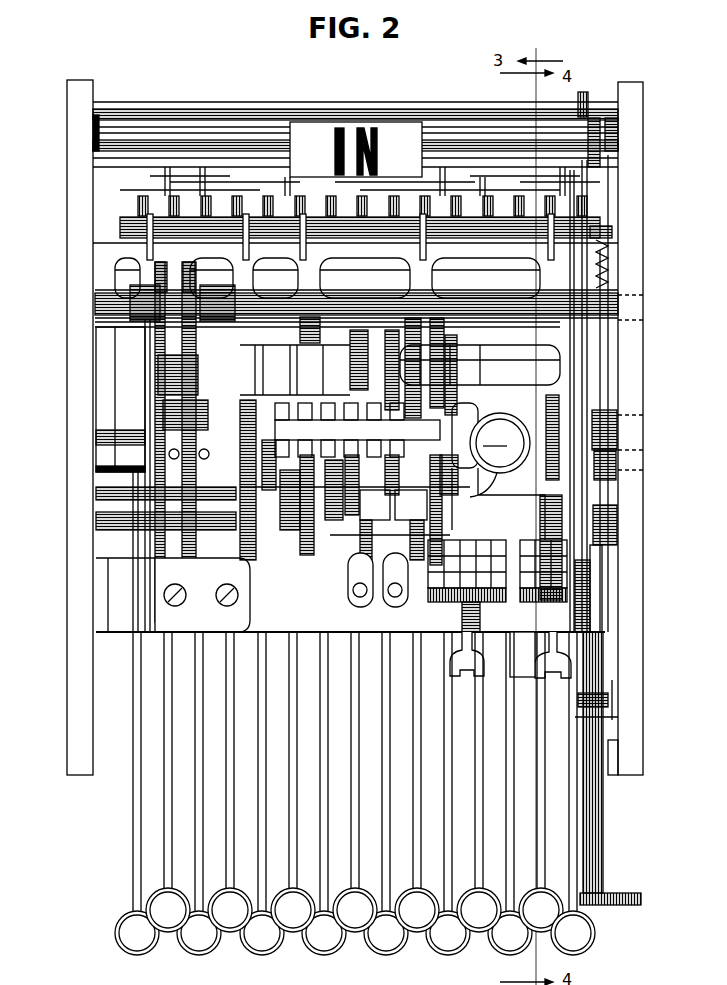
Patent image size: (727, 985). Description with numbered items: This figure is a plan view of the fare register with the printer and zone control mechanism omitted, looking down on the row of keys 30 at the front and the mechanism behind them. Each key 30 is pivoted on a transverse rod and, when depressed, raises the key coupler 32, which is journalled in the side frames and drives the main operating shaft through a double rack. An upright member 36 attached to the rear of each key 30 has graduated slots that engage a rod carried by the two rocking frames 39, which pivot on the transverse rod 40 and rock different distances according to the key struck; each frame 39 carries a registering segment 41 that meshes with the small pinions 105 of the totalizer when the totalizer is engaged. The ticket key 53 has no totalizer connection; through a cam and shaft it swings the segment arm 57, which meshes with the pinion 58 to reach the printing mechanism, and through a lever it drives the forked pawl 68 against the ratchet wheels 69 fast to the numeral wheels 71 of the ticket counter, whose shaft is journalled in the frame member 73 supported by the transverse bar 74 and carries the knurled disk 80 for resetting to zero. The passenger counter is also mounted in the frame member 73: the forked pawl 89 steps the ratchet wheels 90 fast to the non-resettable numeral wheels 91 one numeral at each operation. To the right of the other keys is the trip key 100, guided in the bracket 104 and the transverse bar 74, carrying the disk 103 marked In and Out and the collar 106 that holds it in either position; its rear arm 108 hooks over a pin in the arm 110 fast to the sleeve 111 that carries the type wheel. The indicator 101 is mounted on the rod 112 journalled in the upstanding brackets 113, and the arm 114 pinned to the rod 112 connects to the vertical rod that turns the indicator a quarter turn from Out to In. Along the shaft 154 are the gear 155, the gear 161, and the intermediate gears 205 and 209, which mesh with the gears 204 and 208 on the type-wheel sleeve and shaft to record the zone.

The keys 30 is at (133, 860).
The key coupler 32 is at (122, 380).
The upright member 36 is at (136, 205).
The rocking frames 39 is at (125, 250).
The transverse rod 40 is at (108, 328).
The registering segment 41 is at (438, 418).
The ticket key 53 is at (588, 941).
The segment arm 57 is at (553, 491).
The pinion 58 is at (557, 395).
The forked pawl 68 is at (556, 668).
The ratchet wheels 69 is at (590, 590).
The numeral wheels 71 is at (528, 540).
The frame member 73 is at (420, 595).
The transverse bar 74 is at (316, 632).
The knurled disk 80 is at (586, 616).
The forked pawl 89 is at (470, 668).
The ratchet wheels 90 is at (510, 545).
The numeral wheels 91 is at (470, 622).
The trip key 100 is at (603, 868).
The indicator 101 is at (394, 136).
The disk 103 is at (630, 905).
The bracket 104 is at (613, 762).
The small pinion 105 is at (432, 466).
The collar 106 is at (610, 700).
The arm 108 is at (617, 535).
The arm 110 is at (600, 410).
The sleeve 111 is at (616, 433).
The rod 112 is at (232, 140).
The brackets 113 is at (92, 130).
The arm 114 is at (592, 122).
The shaft 154 is at (100, 298).
The gear 155 is at (158, 265).
The gear 161 is at (192, 266).
The gear 204 is at (187, 480).
The intermediate gear 205 is at (196, 407).
The gear 208 is at (162, 455).
The intermediate gear 209 is at (160, 402).